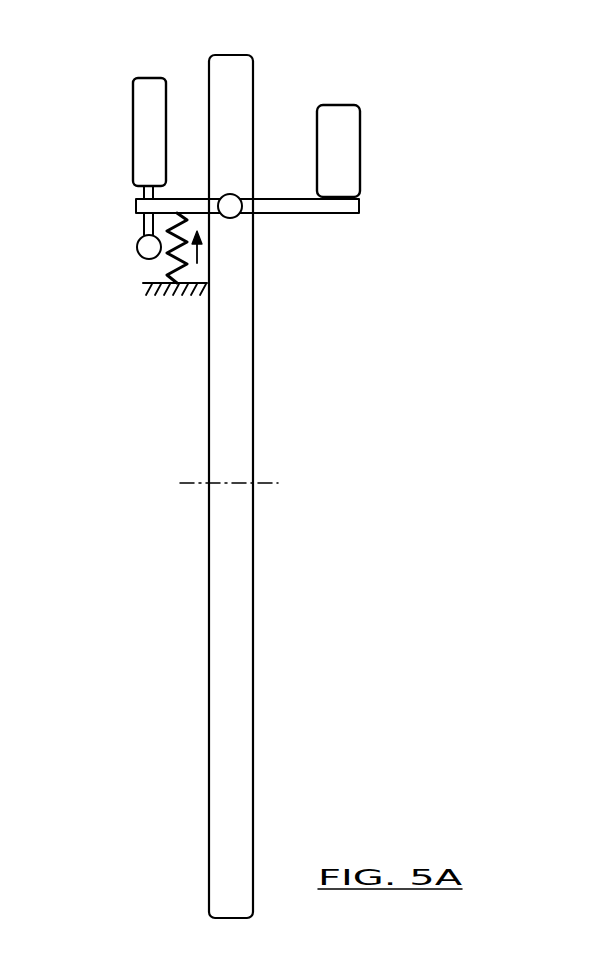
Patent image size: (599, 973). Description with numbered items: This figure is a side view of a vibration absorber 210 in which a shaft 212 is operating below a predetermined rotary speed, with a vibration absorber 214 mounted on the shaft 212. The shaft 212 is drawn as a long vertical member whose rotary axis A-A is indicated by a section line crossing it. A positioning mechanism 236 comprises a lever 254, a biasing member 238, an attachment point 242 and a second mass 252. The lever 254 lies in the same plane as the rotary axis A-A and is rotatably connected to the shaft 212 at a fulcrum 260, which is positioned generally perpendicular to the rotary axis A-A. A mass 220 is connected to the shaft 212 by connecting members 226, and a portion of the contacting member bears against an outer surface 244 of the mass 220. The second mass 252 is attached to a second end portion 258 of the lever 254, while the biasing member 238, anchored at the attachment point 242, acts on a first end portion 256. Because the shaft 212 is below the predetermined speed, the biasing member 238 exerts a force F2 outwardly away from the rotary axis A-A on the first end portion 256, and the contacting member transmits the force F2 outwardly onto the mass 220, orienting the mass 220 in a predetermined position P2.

The vibration absorber 210 is at (431, 399).
The shaft 212 is at (252, 692).
The vibration absorber 214 is at (453, 70).
The mass 220 is at (140, 132).
The connecting members 226 is at (143, 228).
The positioning mechanism 236 is at (404, 165).
The biasing member 238 is at (170, 262).
The attachment point 242 is at (176, 288).
The outer surface 244 is at (133, 92).
The second mass 252 is at (345, 126).
The lever 254 is at (288, 214).
The first end portion 256 is at (136, 205).
The second end portion 258 is at (356, 214).
The fulcrum 260 is at (238, 196).
The predetermined position P2 is at (147, 87).
The force F2 is at (202, 255).
The rotary axis A-A is at (277, 483).